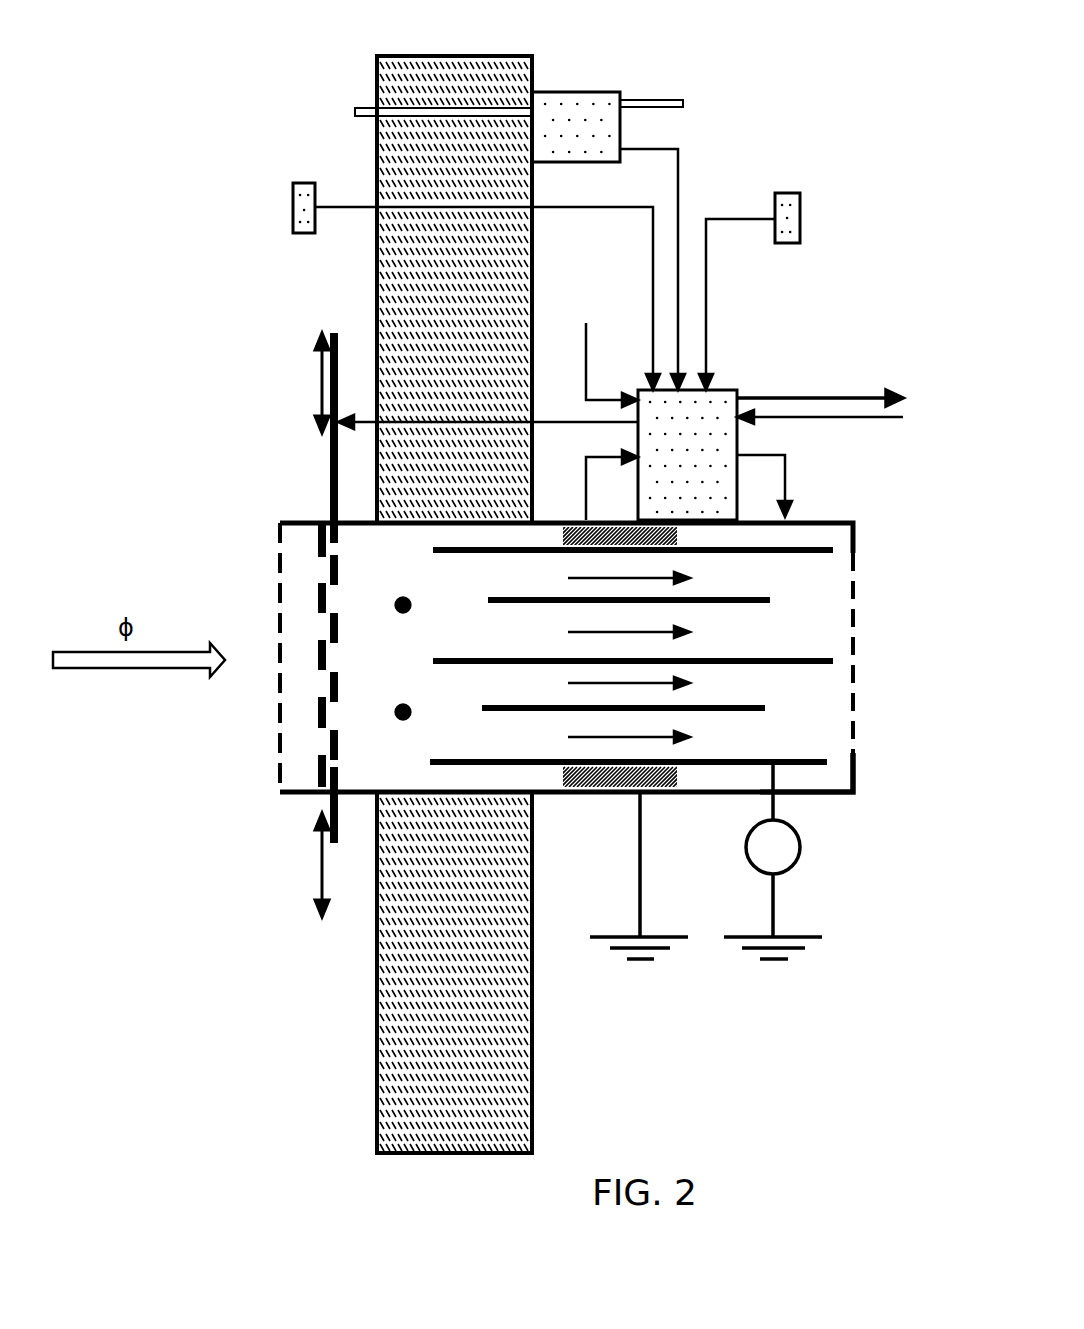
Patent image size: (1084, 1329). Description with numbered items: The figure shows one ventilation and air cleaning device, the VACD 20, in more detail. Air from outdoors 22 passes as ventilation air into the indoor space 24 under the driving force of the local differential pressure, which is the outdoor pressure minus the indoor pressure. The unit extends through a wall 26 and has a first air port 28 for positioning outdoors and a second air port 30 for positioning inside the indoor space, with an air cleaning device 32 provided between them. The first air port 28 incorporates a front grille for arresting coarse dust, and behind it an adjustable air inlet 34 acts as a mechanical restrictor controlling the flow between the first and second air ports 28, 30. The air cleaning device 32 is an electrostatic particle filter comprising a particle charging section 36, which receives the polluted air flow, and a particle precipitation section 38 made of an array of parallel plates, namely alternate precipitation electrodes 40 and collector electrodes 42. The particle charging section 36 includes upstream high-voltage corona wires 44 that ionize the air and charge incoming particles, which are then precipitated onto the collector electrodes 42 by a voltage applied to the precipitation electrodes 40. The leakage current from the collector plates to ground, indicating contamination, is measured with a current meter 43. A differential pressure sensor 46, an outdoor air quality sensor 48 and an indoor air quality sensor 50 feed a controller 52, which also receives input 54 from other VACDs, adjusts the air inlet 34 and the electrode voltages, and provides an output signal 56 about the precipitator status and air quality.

The VACD 20 is at (192, 350).
The outdoors 22 is at (252, 521).
The indoor space 24 is at (816, 332).
The wall 26 is at (377, 1037).
The first air port 28 is at (280, 735).
The second air port 30 is at (853, 757).
The air cleaning device 32 is at (856, 580).
The adjustable air inlet 34 is at (320, 598).
The particle charging section 36 is at (383, 603).
The particle precipitation section 38 is at (557, 644).
The precipitation electrodes 40 is at (770, 598).
The collector electrodes 42 is at (810, 664).
The current meter 43 is at (796, 862).
The high-voltage corona wires 44 is at (460, 740).
The differential pressure sensor 46 is at (578, 92).
The outdoor air quality sensor 48 is at (293, 210).
The indoor air quality sensor 50 is at (800, 219).
The controller 52 is at (718, 390).
The input 54 is at (880, 420).
The output signal/message 56 is at (828, 395).